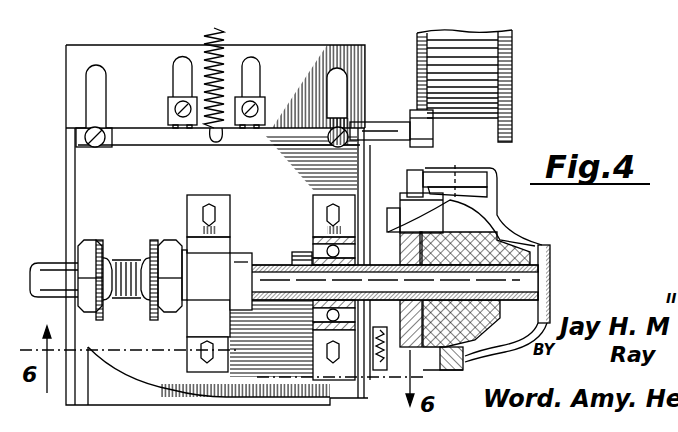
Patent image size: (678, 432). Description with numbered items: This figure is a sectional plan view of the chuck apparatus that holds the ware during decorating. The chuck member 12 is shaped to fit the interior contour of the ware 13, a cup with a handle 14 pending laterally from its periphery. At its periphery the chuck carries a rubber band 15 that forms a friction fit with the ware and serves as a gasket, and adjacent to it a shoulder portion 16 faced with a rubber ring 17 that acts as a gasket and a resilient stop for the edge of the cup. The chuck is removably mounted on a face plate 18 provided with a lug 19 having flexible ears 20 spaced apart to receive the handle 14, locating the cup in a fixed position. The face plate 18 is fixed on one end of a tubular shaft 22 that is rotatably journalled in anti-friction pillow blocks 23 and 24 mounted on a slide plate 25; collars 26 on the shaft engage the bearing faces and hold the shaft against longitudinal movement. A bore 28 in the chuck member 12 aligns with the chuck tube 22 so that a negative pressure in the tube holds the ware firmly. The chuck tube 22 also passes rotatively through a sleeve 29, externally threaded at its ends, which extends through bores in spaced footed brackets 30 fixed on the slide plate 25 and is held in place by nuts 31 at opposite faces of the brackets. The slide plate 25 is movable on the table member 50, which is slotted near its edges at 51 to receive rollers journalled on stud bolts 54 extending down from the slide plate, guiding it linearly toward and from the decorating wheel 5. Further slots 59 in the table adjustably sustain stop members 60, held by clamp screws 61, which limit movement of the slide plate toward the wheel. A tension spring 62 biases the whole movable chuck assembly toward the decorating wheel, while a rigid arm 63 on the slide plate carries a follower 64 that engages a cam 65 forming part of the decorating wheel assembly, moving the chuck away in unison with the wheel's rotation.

The decorating wheel 5 is at (514, 62).
The chuck member 12 is at (493, 303).
The ware 13 is at (536, 247).
The handle 14 is at (498, 200).
The rubber band 15 is at (470, 358).
The shoulder portion 16 is at (436, 366).
The rubber ring 17 is at (450, 369).
The face plate 18 is at (390, 212).
The lug 19 is at (415, 178).
The flexible ears 20 is at (470, 177).
The tubular shaft 22 is at (270, 265).
The anti-friction pillow block 23 is at (230, 208).
The anti-friction pillow block 24 is at (313, 207).
The slide plate 25 is at (78, 184).
The collars 26 is at (238, 253).
The bore 28 is at (500, 284).
The sleeve 29 is at (127, 258).
The footed brackets 30 is at (100, 240).
The nuts 31 is at (85, 258).
The table member 50 is at (66, 48).
The slots 51 is at (90, 87).
The stud bolts 54 is at (85, 138).
The slots 59 is at (178, 72).
The stop members 60 is at (170, 100).
The clamp screws 61 is at (170, 110).
The tension spring 62 is at (222, 42).
The rigid arm 63 is at (404, 122).
The follower 64 is at (432, 140).
The cam 65 is at (423, 36).